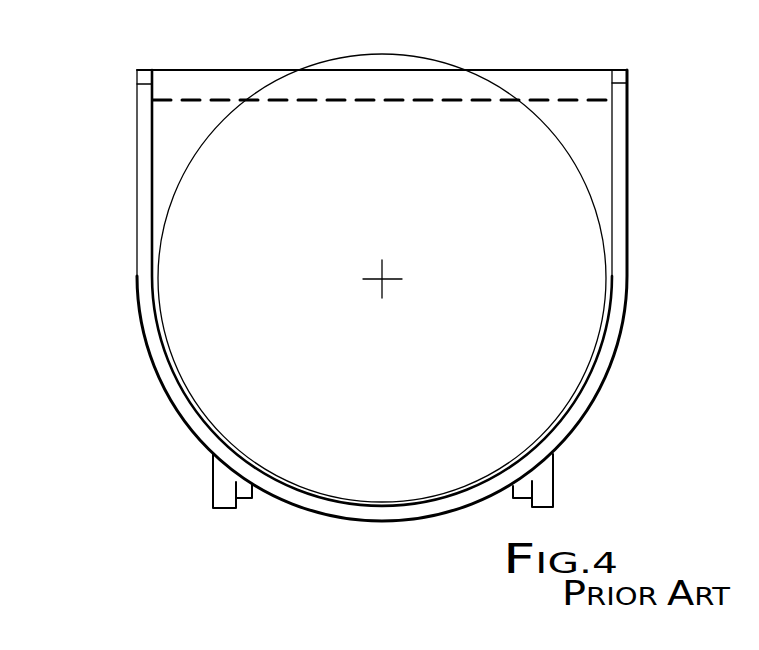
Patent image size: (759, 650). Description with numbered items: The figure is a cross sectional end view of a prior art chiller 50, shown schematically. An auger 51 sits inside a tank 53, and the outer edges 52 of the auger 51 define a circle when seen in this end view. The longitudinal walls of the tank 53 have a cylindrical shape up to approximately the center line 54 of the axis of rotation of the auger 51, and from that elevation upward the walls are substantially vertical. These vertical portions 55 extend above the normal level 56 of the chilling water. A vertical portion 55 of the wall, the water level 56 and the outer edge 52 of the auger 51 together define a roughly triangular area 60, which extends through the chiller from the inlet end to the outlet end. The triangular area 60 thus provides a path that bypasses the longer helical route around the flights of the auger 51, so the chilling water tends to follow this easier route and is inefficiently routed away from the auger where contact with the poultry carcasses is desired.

The prior art chiller 50 is at (132, 168).
The auger 51 is at (562, 200).
The outer edges 52 is at (190, 157).
The tank 53 is at (338, 520).
The center line 54 is at (378, 277).
The vertical portions 55 is at (143, 118).
The normal level 56 is at (575, 97).
The triangular area 60 is at (587, 127).